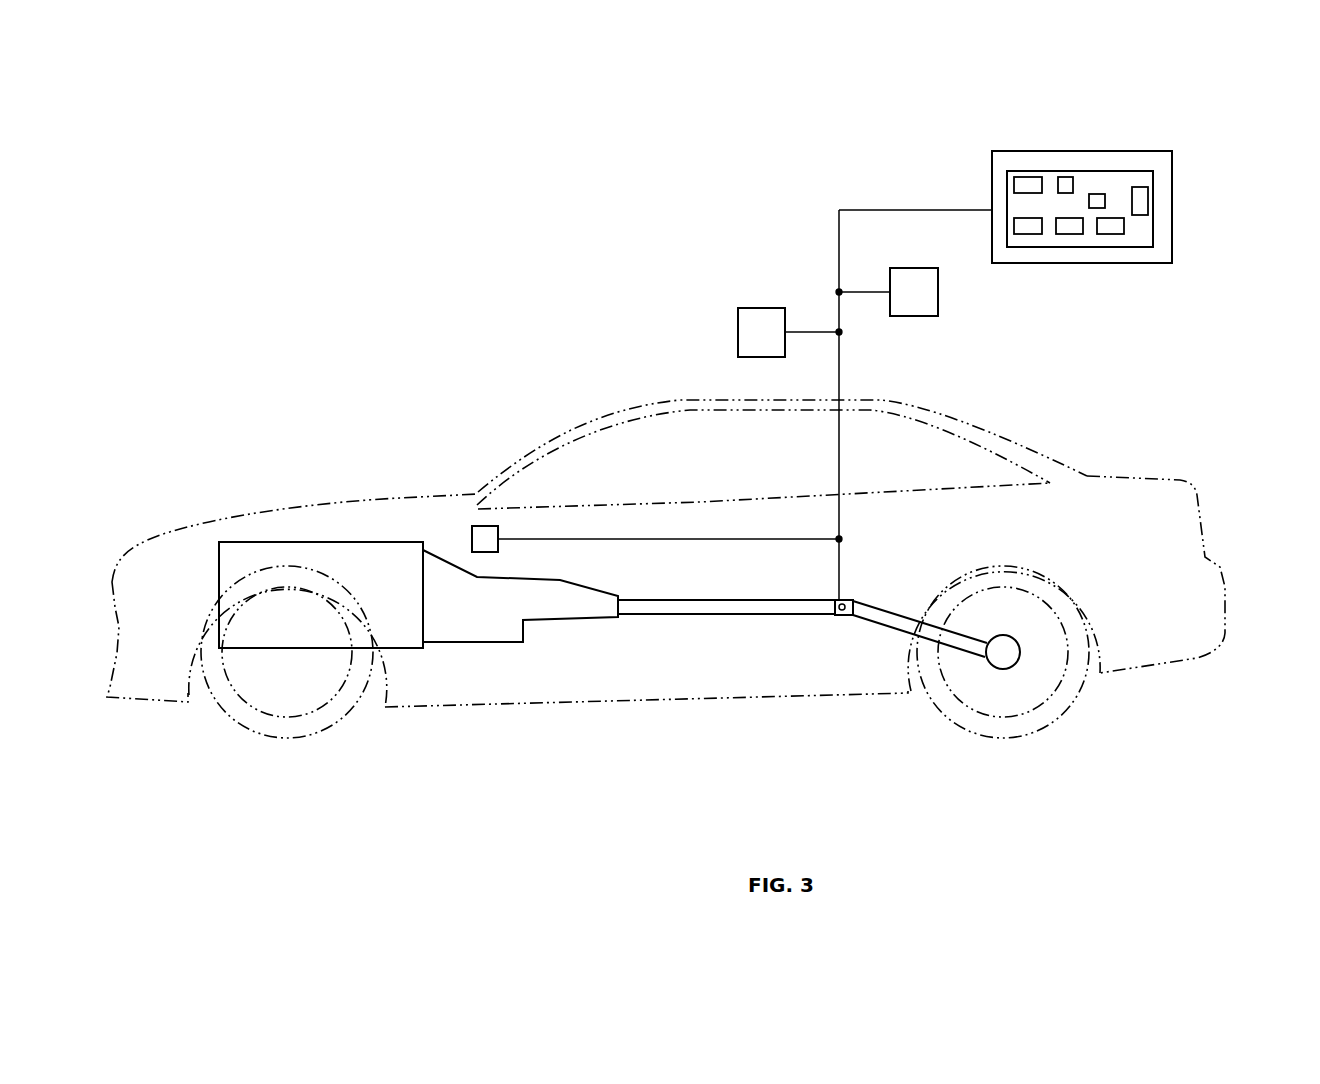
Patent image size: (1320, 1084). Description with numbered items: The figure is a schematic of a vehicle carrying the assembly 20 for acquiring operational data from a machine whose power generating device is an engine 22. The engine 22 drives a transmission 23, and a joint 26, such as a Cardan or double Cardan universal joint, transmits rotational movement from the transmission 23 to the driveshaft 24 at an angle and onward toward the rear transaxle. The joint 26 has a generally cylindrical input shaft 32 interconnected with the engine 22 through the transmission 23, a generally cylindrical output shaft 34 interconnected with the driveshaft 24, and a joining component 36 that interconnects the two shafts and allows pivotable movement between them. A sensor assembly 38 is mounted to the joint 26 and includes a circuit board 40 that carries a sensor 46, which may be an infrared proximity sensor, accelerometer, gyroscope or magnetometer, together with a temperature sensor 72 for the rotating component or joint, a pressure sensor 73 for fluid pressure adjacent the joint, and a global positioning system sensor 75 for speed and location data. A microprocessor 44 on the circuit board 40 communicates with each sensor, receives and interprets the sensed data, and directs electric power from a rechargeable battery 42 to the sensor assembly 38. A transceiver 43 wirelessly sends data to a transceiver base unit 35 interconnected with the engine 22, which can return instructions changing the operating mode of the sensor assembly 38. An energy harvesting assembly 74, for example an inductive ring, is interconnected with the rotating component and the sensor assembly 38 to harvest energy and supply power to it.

The assembly 20 is at (483, 312).
The engine 22 is at (287, 550).
The transmission 23 is at (480, 622).
The driveshaft 24 is at (666, 605).
The joint 26 is at (844, 620).
The input shaft 32 is at (772, 607).
The output shaft 34 is at (888, 613).
The transceiver base unit 35 is at (480, 538).
The joining component 36 is at (850, 598).
The sensor assembly 38 is at (1105, 210).
The circuit board 40 is at (1097, 210).
The rechargeable battery 42 is at (915, 305).
The transceiver 43 is at (1067, 182).
The microprocessor 44 is at (1110, 230).
The sensor 46 is at (1027, 185).
The temperature sensor 72 is at (1068, 228).
The pressure sensor 73 is at (1097, 202).
The energy harvesting assembly 74 is at (763, 318).
The global positioning system sensor 75 is at (1145, 200).